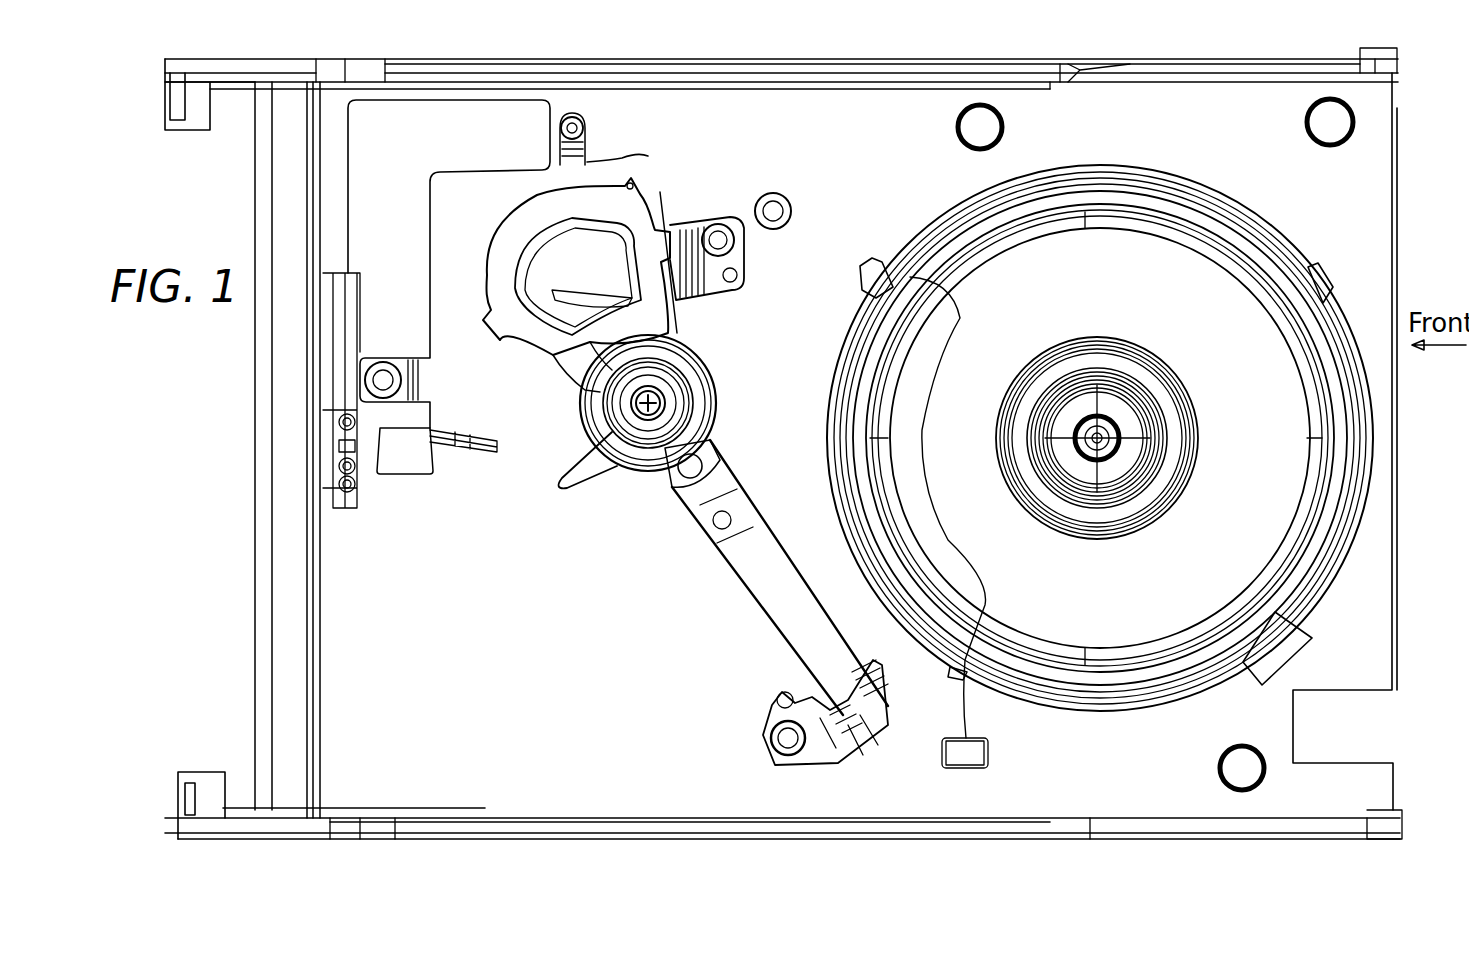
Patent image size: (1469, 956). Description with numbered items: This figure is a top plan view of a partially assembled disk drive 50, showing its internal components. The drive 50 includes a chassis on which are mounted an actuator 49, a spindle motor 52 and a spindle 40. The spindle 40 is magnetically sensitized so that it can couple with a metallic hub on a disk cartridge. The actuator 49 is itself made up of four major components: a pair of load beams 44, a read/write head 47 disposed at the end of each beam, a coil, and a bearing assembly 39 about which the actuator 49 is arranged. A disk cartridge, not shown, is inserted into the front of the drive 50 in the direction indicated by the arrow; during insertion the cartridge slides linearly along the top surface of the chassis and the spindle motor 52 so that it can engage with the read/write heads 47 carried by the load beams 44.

The bearing assembly 39 is at (612, 434).
The spindle 40 is at (1196, 405).
The load beams 44 is at (752, 516).
The read/write head 47 is at (836, 750).
The actuator 49 is at (730, 376).
The disk drive 50 is at (320, 889).
The spindle motor 52 is at (1015, 296).